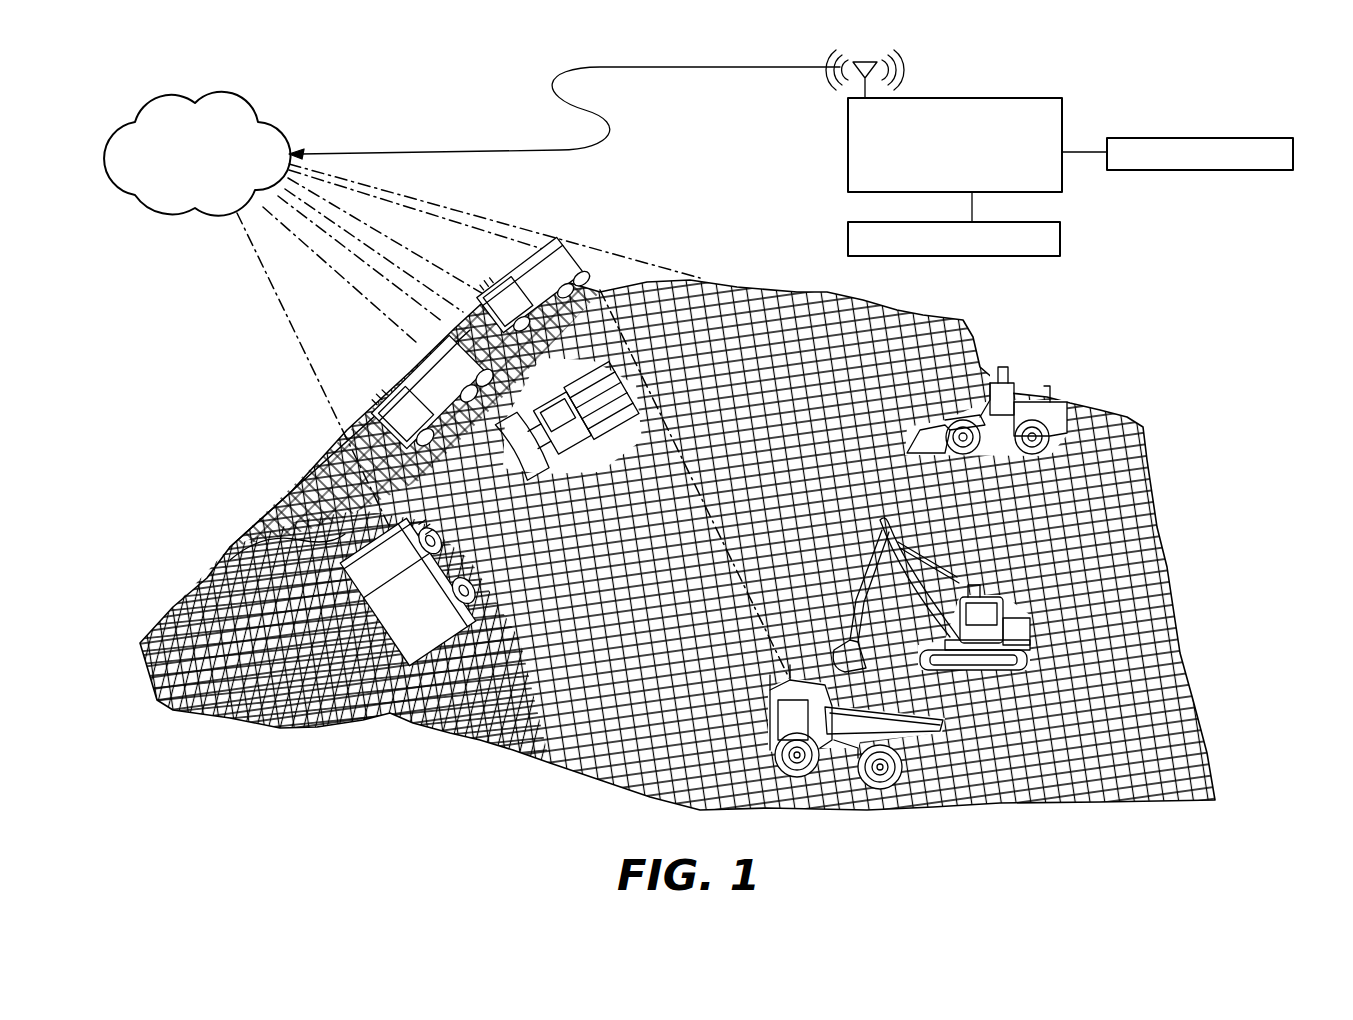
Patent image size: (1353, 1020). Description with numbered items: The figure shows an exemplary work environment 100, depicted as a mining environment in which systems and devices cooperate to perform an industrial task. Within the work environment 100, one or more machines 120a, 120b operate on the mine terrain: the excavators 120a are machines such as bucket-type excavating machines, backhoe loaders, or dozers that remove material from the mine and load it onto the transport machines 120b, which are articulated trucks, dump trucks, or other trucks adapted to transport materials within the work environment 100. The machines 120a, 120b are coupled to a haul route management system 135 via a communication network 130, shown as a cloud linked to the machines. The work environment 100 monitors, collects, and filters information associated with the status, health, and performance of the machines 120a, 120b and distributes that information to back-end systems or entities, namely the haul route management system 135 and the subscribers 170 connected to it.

The work environment 100 is at (936, 299).
The excavators 120a is at (600, 298).
The transport machines 120b is at (545, 280).
The communication network 130 is at (266, 125).
The haul route management system 135 is at (1062, 105).
The subscribers 170 is at (1183, 138).